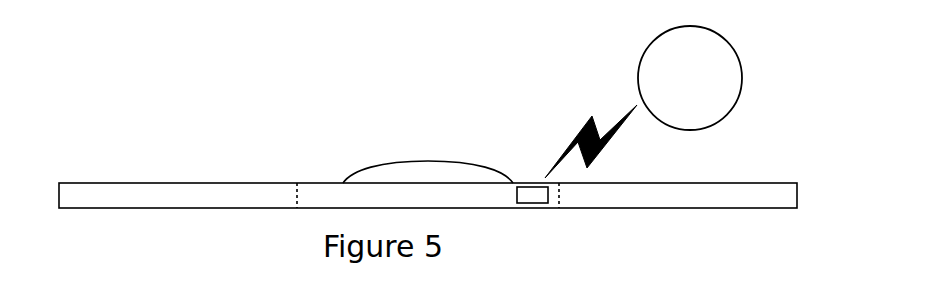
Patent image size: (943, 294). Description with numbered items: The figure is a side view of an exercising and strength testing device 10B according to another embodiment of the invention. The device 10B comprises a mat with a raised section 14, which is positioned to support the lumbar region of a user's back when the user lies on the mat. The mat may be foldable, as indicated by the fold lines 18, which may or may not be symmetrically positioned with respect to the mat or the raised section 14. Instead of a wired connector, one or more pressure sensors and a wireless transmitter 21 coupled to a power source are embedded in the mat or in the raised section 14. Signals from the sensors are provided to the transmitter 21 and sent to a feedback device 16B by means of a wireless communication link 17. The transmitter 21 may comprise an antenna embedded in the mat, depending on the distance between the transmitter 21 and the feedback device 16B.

The device 10B is at (191, 129).
The raised section 14 is at (388, 162).
The feedback device 16B is at (743, 65).
The wireless communication link 17 is at (588, 115).
The fold lines 18 is at (297, 183).
The wireless transmitter 21 is at (530, 208).